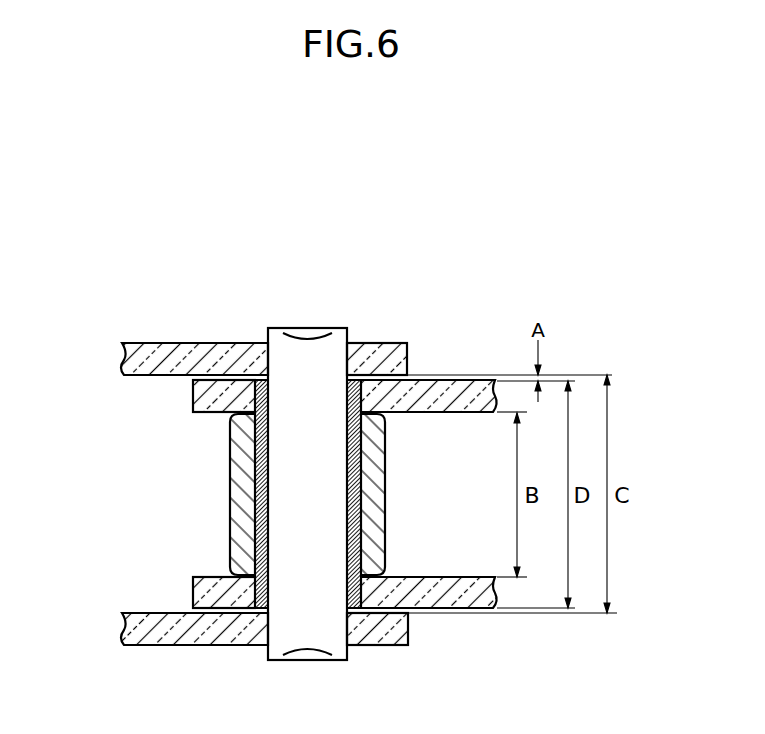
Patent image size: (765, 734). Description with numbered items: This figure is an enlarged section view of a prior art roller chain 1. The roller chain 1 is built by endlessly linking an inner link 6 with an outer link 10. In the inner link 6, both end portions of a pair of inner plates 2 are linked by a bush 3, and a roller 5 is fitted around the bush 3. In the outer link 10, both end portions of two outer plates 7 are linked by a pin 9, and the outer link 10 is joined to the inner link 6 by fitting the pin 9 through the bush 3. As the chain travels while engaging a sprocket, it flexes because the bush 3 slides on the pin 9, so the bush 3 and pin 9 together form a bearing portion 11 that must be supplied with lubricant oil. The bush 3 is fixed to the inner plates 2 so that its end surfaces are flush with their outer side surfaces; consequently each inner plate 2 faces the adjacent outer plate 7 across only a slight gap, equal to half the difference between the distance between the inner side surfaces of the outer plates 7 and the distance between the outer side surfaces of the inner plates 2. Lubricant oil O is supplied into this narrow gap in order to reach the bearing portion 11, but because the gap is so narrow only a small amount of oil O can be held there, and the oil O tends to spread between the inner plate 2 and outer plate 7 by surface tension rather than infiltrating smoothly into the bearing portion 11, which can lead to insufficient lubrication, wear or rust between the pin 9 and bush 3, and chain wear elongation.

The roller chain 1 is at (326, 207).
The inner plate 2 is at (197, 400).
The bush 3 is at (250, 480).
The roller 5 is at (240, 543).
The inner link 6 is at (136, 537).
The outer plate 7 is at (160, 343).
The pin 9 is at (308, 333).
The outer link 10 is at (214, 327).
The bearing portion 11 is at (372, 491).
The lubricant oil O is at (385, 383).